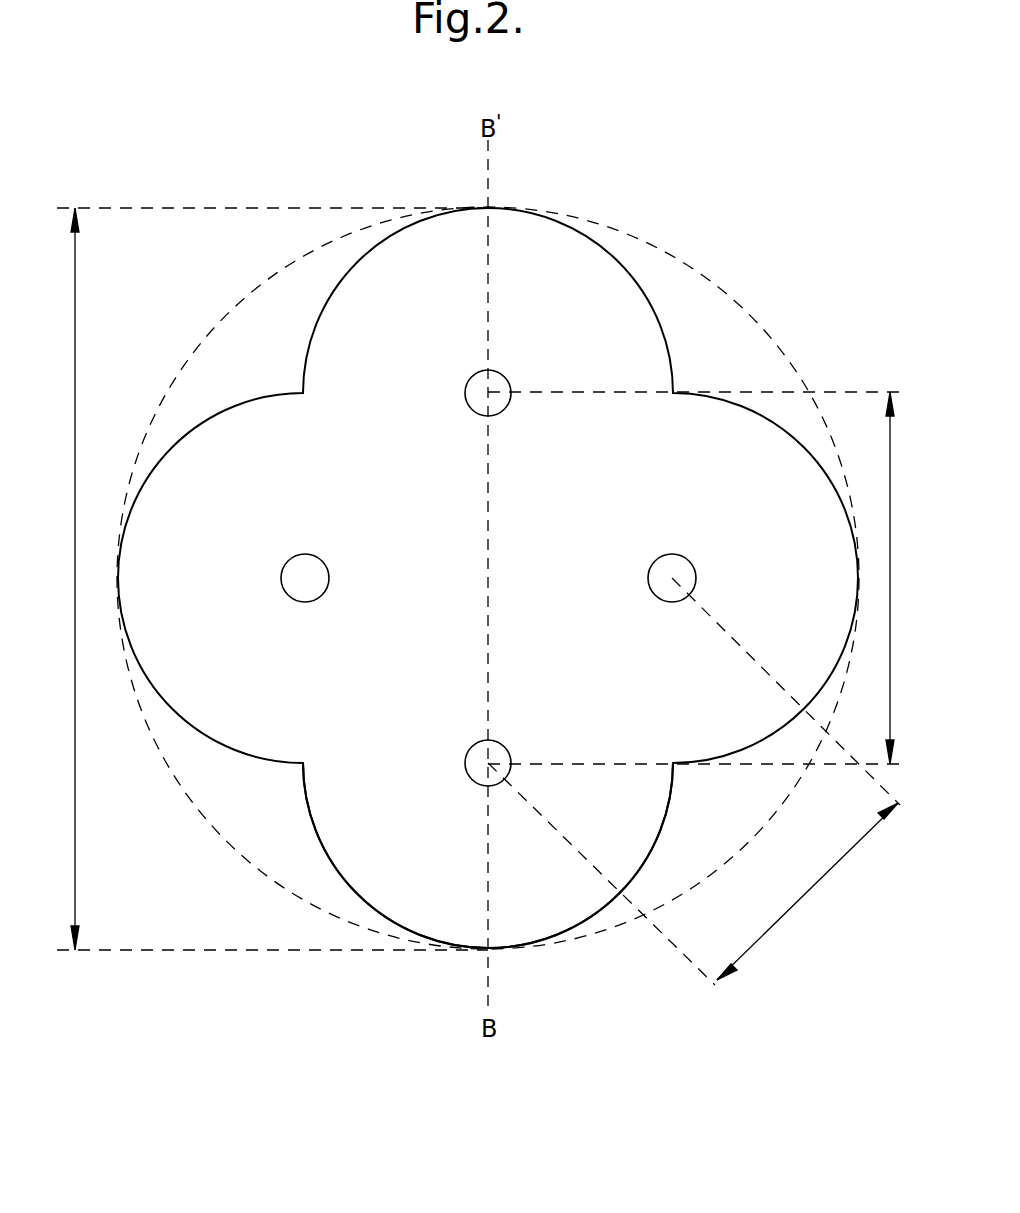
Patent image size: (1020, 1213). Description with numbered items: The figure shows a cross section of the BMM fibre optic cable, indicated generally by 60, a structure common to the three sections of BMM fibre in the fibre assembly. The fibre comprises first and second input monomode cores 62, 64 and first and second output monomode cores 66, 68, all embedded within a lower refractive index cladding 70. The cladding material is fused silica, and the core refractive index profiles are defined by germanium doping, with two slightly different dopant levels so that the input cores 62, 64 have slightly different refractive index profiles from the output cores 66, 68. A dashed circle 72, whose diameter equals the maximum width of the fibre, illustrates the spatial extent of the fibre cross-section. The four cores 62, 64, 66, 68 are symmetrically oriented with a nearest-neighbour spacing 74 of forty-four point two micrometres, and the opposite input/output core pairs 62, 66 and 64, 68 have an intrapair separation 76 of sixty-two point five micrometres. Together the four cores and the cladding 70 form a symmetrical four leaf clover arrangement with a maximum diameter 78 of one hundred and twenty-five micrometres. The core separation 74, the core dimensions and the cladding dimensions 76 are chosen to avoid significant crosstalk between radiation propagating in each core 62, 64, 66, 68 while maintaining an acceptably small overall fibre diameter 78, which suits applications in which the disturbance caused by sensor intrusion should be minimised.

The BMM fibre cross section 60 is at (226, 165).
The first input monomode core 62 is at (485, 393).
The second input monomode core 64 is at (670, 572).
The first output monomode core 66 is at (485, 762).
The second output monomode core 68 is at (303, 580).
The cladding 70 is at (365, 830).
The dashed circle 72 is at (200, 810).
The nearest-neighbour spacing 74 is at (797, 905).
The intrapair separation 76 is at (890, 570).
The maximum diameter 78 is at (75, 497).